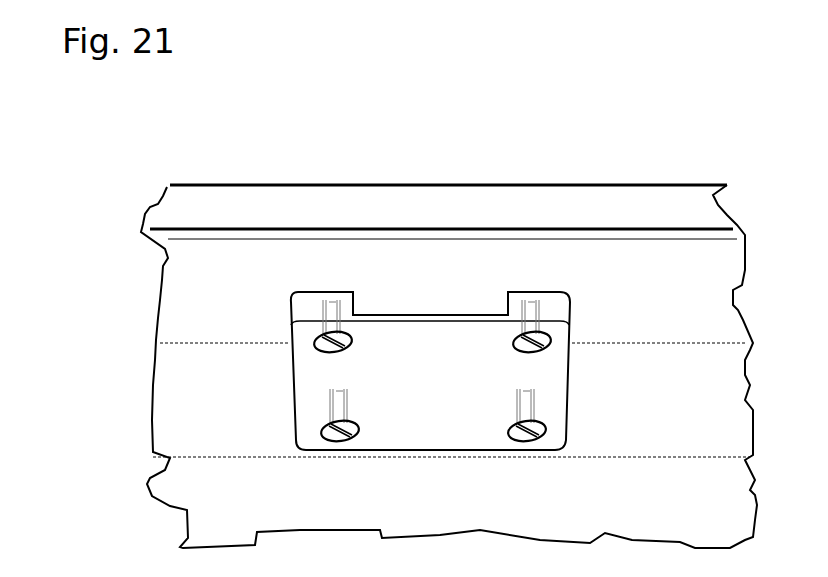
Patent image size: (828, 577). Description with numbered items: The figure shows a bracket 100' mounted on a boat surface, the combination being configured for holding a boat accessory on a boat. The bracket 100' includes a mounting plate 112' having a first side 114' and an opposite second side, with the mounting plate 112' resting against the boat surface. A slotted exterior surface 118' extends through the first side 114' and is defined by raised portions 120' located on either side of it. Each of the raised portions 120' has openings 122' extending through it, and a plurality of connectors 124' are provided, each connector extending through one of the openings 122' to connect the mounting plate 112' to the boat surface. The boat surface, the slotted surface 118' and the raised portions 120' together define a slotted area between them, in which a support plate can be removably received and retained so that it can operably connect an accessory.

The bracket 100' is at (514, 269).
The mounting plate 112' is at (514, 371).
The first side 114' is at (617, 416).
The slotted exterior surface 118' is at (444, 201).
The raised portions 120' is at (396, 366).
The openings 122' is at (402, 204).
The connectors 124' is at (207, 458).